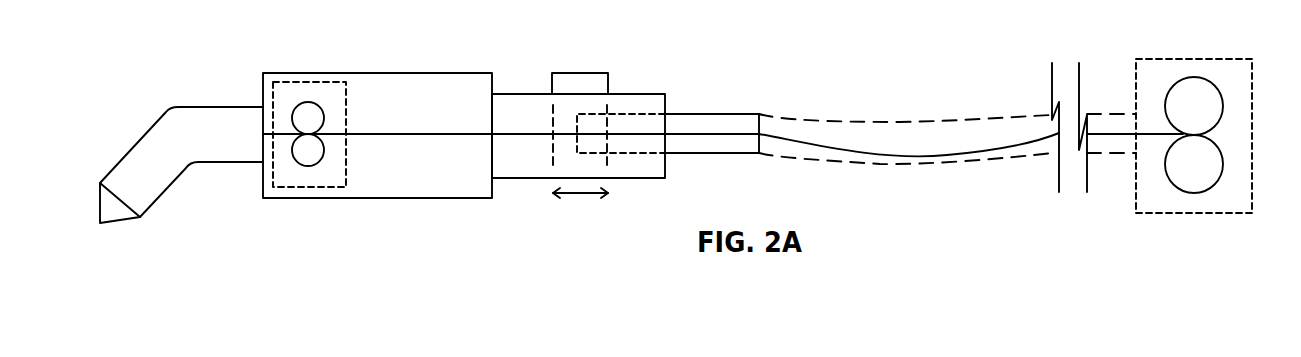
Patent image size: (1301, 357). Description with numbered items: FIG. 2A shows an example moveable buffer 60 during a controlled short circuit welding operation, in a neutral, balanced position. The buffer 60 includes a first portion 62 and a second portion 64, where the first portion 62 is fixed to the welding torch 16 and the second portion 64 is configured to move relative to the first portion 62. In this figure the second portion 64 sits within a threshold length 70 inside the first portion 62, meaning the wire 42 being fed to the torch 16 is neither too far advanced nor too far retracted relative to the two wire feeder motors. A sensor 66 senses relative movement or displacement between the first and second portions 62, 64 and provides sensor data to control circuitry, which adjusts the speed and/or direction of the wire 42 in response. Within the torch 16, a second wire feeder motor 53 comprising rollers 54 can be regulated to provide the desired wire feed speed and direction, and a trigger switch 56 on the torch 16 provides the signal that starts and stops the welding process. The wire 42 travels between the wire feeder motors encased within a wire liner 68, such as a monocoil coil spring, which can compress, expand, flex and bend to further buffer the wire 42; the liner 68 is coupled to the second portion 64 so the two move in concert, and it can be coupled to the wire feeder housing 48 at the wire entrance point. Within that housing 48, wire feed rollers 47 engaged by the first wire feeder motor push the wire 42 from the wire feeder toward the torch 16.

The welding torch 16 is at (492, 198).
The welding wire 42 is at (866, 147).
The wire feed rollers 47 is at (1203, 77).
The housing 48 is at (1213, 213).
The second wire feeder motor 53 is at (298, 198).
The rollers 54 is at (310, 102).
The trigger switch 56 is at (368, 227).
The moveable buffer 60 is at (677, 78).
The first portion 62 is at (637, 178).
The second portion 64 is at (697, 114).
The sensor 66 is at (597, 73).
The wire liner 68 is at (913, 122).
The threshold length 70 is at (588, 200).